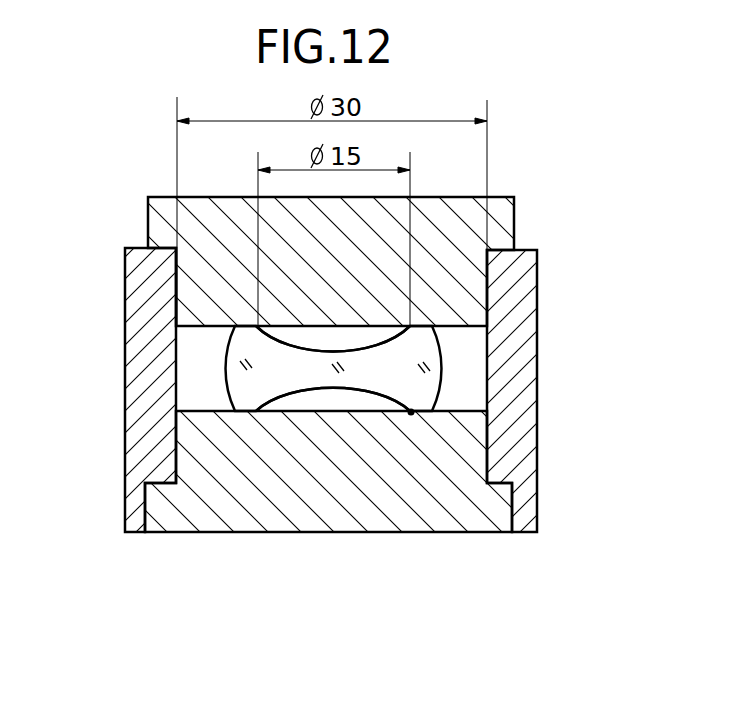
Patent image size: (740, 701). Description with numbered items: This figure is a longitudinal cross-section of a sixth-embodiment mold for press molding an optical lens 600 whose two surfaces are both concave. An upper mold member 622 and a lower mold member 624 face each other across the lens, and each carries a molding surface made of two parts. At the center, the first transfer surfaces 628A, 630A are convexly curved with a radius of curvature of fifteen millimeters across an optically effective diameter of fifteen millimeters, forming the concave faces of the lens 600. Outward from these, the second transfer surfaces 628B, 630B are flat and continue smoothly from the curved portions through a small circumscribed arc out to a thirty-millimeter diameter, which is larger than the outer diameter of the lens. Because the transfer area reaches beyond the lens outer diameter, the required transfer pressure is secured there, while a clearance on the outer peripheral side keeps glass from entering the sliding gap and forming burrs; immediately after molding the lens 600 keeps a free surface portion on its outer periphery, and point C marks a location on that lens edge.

The optical lens 600 is at (432, 357).
The upper mold member 622 is at (502, 197).
The lower mold member 624 is at (348, 532).
The first transfer surface 628A is at (311, 344).
The second transfer surface 628B is at (207, 328).
The first transfer surface 630A is at (311, 380).
The second transfer surface 630B is at (453, 408).
The point C on lens edge C is at (414, 420).